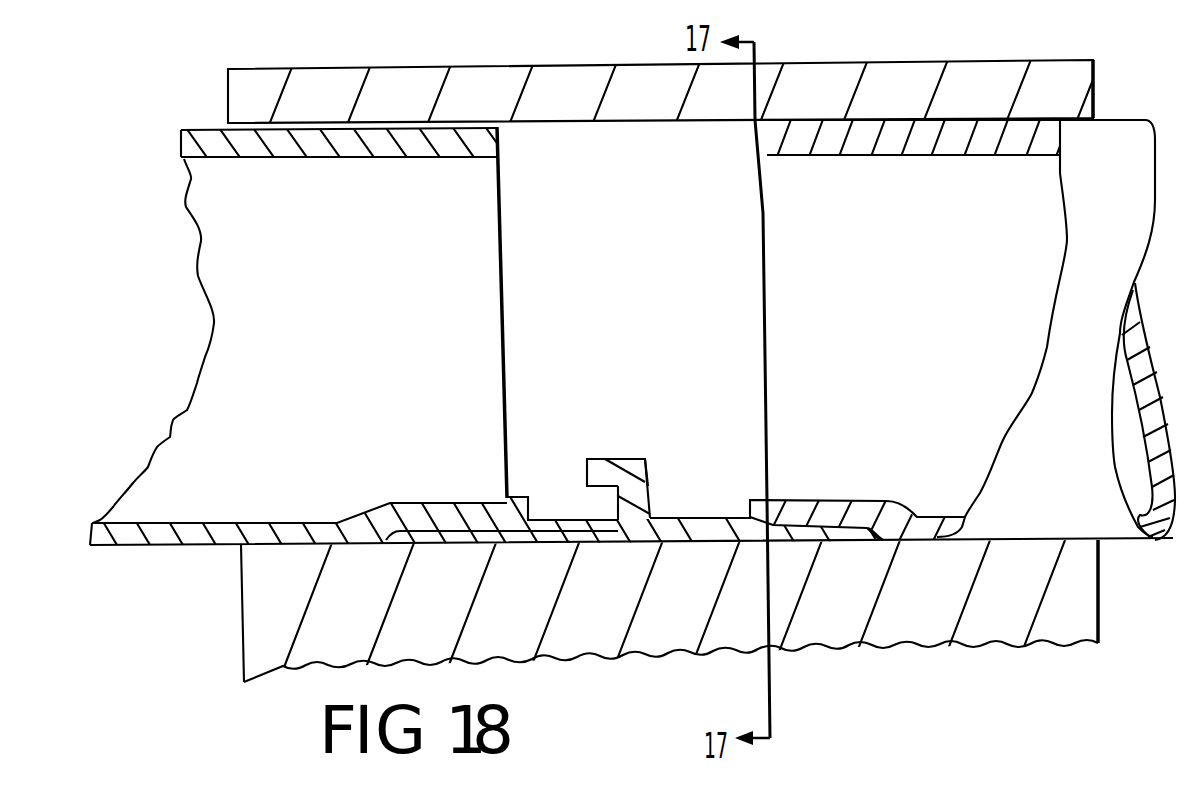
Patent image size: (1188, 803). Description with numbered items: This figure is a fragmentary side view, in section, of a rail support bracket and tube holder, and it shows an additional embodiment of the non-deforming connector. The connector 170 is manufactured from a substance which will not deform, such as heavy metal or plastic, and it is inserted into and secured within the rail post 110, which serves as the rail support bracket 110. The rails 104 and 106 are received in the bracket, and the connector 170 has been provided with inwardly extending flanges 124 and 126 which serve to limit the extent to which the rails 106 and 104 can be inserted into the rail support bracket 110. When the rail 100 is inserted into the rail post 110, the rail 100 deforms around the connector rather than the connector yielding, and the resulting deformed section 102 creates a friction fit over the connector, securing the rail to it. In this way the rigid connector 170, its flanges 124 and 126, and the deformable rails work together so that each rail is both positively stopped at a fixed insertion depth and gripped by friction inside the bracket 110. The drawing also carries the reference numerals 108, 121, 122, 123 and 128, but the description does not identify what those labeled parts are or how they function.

The rail 100 is at (503, 147).
The deformed section 102 is at (475, 502).
The rail 104 is at (453, 150).
The rail 106 is at (850, 148).
The divider wall 108 is at (762, 302).
The rail post 110 is at (700, 120).
The latch head 121 is at (636, 459).
The latch member 122 is at (650, 472).
The latch base 123 is at (612, 522).
The inwardly extending flange 124 is at (752, 503).
The inwardly extending flange 126 is at (510, 498).
The plate portion 128 is at (868, 553).
The connector 170 is at (588, 520).